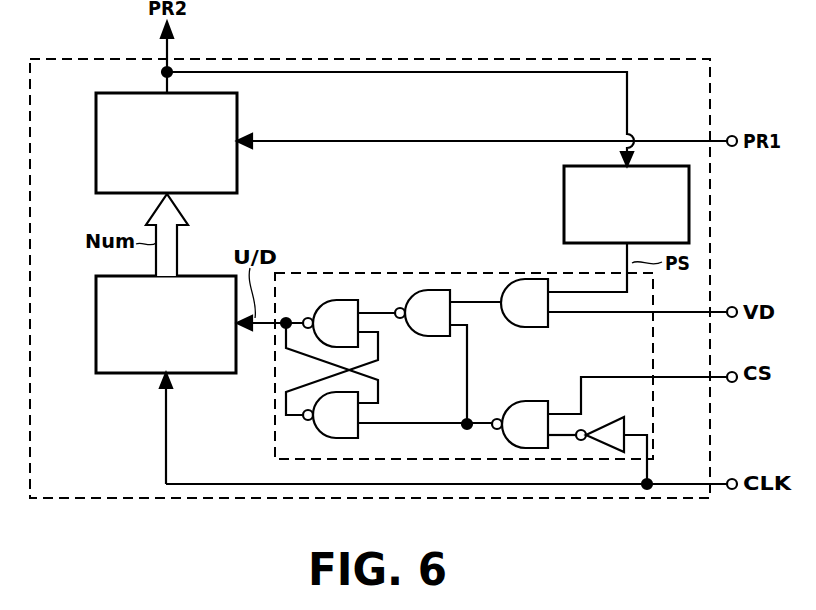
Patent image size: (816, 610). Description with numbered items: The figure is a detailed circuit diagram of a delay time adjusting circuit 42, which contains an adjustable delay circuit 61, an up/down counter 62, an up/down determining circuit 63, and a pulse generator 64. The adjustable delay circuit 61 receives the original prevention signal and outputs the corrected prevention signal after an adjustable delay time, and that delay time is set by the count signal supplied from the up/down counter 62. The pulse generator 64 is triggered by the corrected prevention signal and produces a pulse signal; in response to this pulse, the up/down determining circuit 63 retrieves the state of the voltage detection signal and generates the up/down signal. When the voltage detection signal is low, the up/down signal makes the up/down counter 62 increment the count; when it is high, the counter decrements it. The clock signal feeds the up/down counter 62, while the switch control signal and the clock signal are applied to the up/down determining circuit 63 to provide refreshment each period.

The delay time adjusting circuit 42 is at (612, 58).
The adjustable delay circuit 61 is at (96, 148).
The up/down counter 62 is at (96, 333).
The up/down determining circuit 63 is at (275, 422).
The pulse generator 64 is at (564, 207).